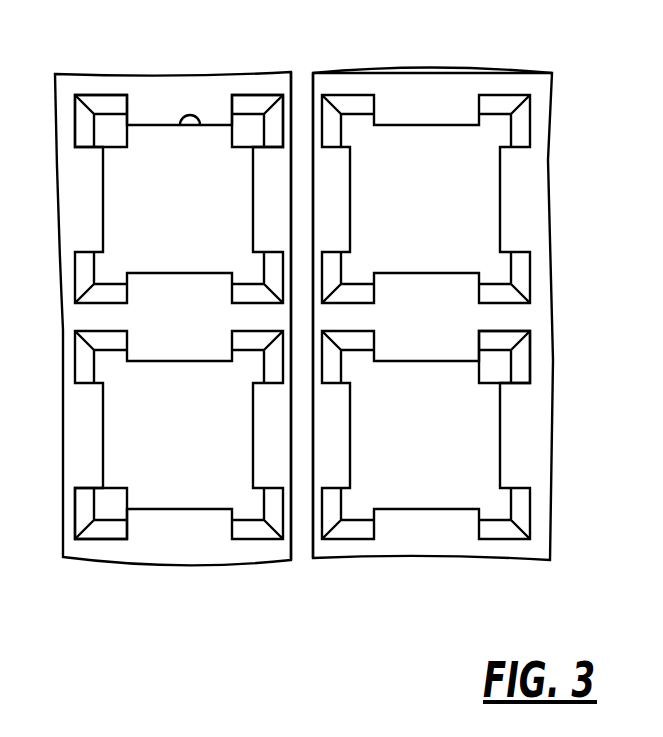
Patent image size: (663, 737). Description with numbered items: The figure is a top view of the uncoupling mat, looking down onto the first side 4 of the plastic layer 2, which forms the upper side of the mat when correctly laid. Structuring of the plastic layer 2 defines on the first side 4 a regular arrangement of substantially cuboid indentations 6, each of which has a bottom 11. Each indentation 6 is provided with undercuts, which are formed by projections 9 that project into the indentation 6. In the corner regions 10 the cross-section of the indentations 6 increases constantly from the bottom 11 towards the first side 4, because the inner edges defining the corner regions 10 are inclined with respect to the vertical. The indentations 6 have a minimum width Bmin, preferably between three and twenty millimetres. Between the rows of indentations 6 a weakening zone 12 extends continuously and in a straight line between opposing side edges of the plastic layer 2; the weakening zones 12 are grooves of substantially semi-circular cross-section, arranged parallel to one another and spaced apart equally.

The plastic layer 2 is at (520, 193).
The first side 4 is at (435, 82).
The indentations 6 is at (425, 190).
The projection 9 is at (105, 160).
The corner regions 10 is at (101, 108).
The bottom 11 is at (416, 242).
The weakening zones 12 is at (303, 547).
The minimum width Bmin is at (355, 429).